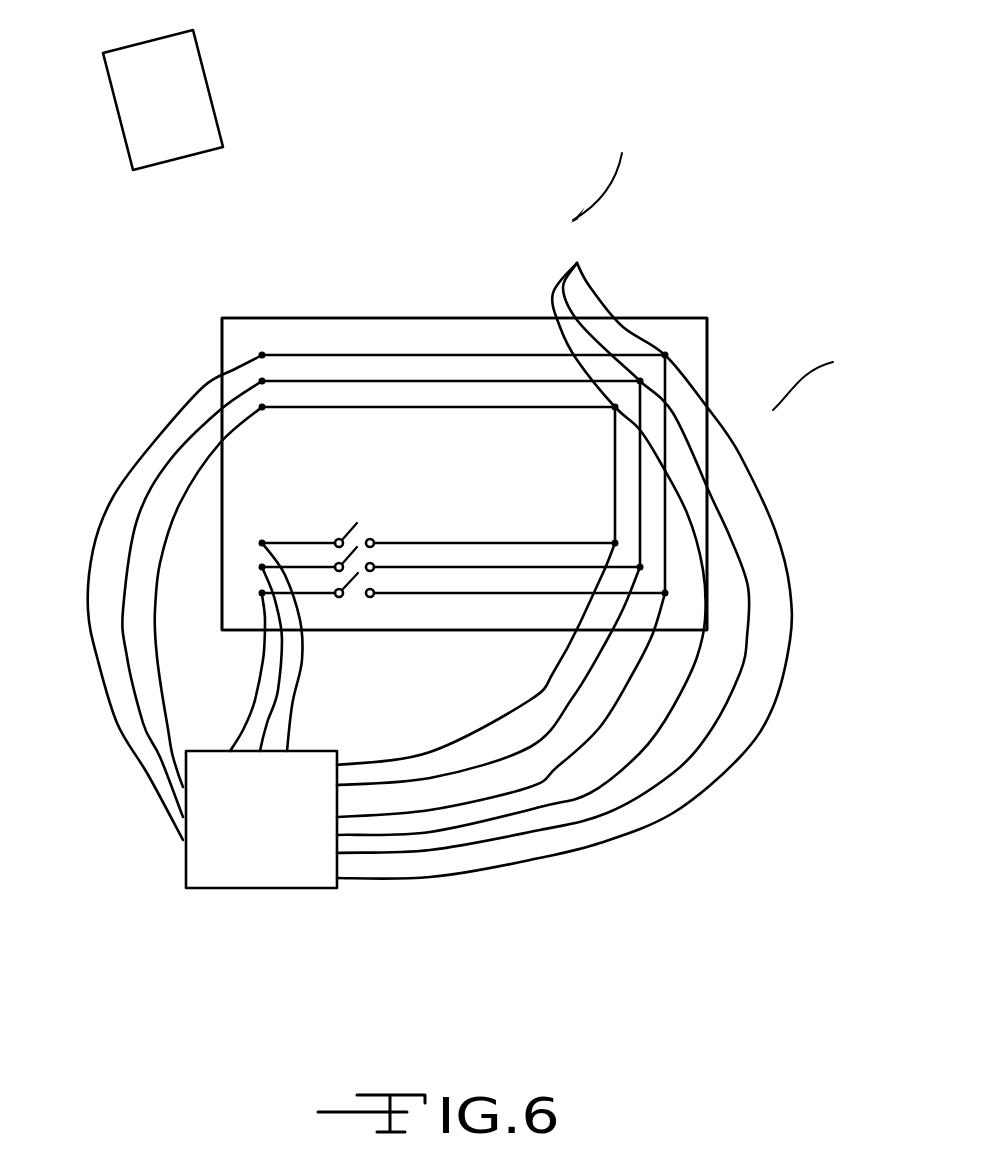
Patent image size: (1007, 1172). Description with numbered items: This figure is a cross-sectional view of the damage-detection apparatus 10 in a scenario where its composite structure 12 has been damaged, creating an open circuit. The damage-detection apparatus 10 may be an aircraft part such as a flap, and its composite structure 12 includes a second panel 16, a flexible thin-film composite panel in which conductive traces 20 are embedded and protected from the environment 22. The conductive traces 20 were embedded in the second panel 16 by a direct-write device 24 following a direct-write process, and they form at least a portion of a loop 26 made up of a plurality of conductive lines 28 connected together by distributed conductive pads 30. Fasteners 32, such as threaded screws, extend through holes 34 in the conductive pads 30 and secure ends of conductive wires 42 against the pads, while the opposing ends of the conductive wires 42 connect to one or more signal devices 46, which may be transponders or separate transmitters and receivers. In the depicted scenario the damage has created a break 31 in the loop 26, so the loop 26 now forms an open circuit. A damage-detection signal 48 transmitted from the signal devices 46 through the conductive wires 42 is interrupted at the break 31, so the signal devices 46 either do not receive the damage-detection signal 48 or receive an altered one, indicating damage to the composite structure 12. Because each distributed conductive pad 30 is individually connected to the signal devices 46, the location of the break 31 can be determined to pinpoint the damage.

The damage-detection apparatus 10 is at (605, 175).
The composite structure 12 is at (368, 317).
The second panel 16 is at (700, 336).
The conductive traces 20 is at (483, 407).
The environment 22 is at (821, 378).
The direct-write device 24 is at (205, 73).
The loop 26 is at (451, 474).
The conductive lines 28 is at (438, 475).
The conductive pads 30 is at (262, 407).
The break 31 is at (353, 583).
The fasteners 32 is at (564, 564).
The holes 34 is at (665, 593).
The conductive wires 42 is at (493, 793).
The signal devices 46 is at (261, 819).
The damage-detection signal 48 is at (167, 727).